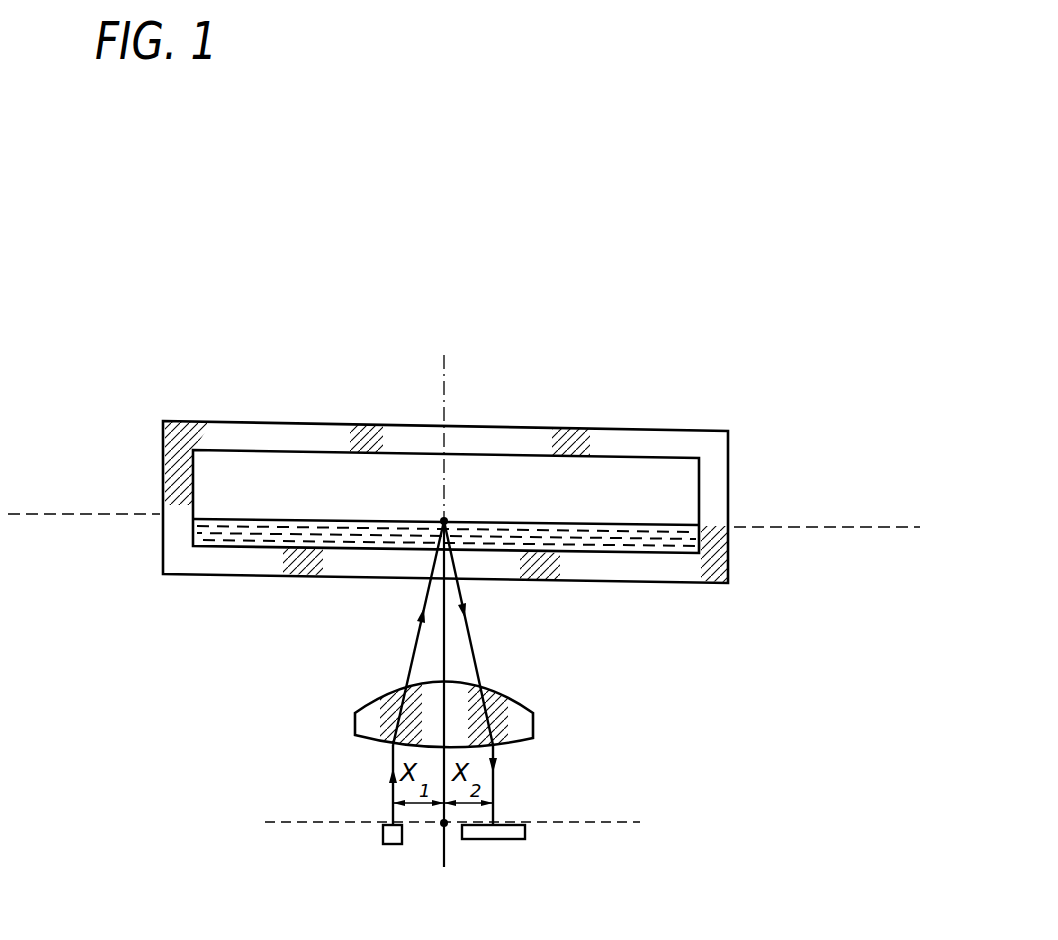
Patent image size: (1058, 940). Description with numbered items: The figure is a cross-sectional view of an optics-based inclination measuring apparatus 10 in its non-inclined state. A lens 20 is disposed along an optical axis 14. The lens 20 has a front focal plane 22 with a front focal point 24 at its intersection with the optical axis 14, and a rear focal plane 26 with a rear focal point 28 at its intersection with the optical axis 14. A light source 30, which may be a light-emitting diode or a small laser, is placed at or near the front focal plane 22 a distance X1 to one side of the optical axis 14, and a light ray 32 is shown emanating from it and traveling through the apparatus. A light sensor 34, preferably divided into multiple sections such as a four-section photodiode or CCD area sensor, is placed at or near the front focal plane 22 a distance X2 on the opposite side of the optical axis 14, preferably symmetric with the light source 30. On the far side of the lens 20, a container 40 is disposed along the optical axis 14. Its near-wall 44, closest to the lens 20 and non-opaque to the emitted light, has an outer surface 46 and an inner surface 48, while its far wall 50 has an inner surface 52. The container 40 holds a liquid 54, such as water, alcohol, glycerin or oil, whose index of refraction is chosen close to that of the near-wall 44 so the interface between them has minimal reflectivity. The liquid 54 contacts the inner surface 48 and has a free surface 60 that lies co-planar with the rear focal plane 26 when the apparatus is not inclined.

The inclination measuring apparatus 10 is at (497, 311).
The optical axis 14 is at (443, 370).
The lens 20 is at (356, 728).
The front focal plane 22 is at (636, 822).
The front focal point 24 is at (443, 826).
The rear focal plane 26 is at (112, 513).
The rear focal point 28 is at (444, 521).
The light source 30 is at (383, 831).
The light ray 32 is at (382, 753).
The light sensor 34 is at (532, 838).
The container 40 is at (140, 402).
The near-wall 44 is at (622, 567).
The outer surface 46 is at (703, 583).
The inner surface 48 is at (530, 550).
The far wall 50 is at (669, 446).
The inner surface 52 is at (475, 458).
The liquid 54 is at (215, 532).
The free surface 60 is at (595, 525).